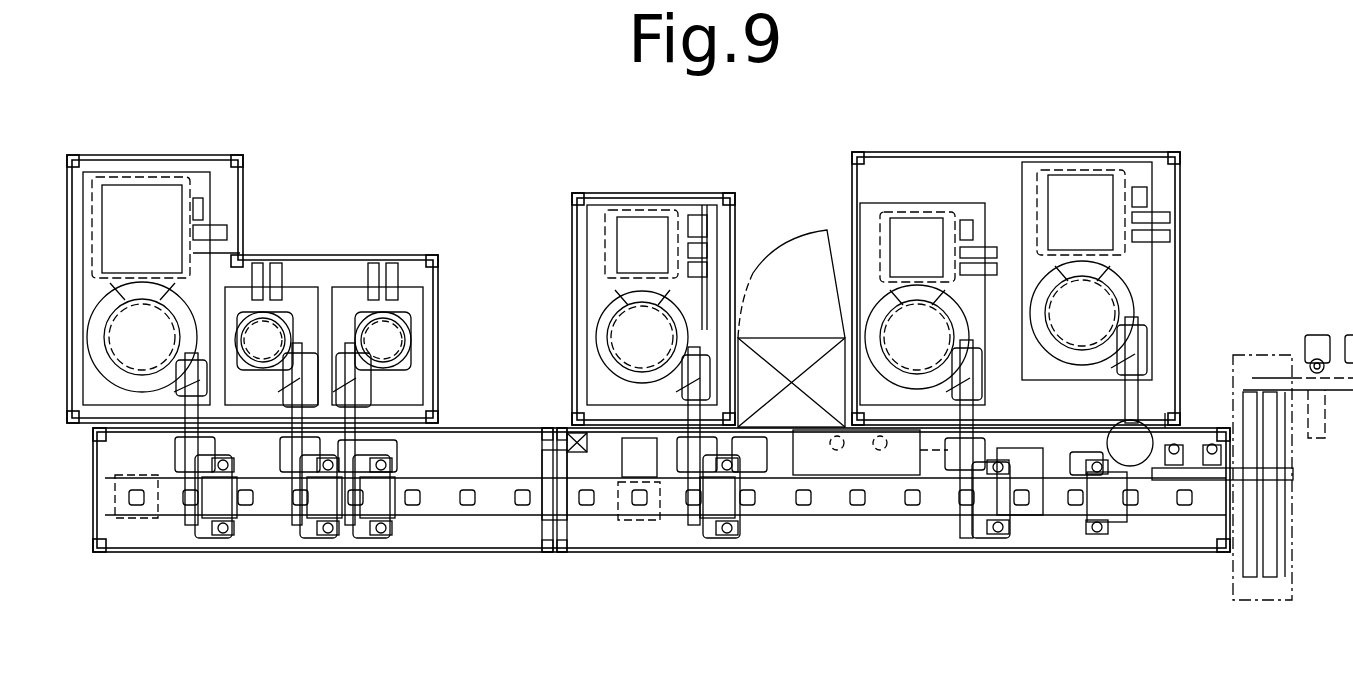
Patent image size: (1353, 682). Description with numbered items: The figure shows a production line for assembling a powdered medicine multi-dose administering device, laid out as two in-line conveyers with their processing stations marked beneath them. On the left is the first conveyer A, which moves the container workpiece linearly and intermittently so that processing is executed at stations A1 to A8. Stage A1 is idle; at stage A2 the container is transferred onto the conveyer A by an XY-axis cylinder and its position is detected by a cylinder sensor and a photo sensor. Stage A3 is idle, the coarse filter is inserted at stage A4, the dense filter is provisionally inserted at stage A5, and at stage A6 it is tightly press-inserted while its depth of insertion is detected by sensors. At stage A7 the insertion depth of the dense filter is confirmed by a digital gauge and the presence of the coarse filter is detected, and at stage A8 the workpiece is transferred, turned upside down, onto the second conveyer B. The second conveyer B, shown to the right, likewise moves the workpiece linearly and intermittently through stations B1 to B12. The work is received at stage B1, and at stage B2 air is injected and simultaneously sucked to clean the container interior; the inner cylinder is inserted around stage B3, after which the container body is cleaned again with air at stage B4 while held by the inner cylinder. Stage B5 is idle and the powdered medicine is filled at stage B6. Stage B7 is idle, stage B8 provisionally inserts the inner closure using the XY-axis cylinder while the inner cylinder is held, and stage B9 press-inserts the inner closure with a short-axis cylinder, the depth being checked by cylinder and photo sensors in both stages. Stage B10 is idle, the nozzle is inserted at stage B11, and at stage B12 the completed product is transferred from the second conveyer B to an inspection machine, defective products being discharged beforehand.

The stage A1 is at (136, 505).
The stage A2 is at (190, 505).
The stage A3 is at (245, 505).
The stage A4 is at (300, 505).
The stage A5 is at (355, 505).
The stage A6 is at (412, 505).
The stage A7 is at (467, 505).
The stage A8 is at (522, 505).
The stage B1 is at (586, 505).
The stage B2 is at (639, 505).
The stage B3 is at (693, 505).
The stage B4 is at (747, 505).
The stage B5 is at (803, 505).
The stage B6 is at (857, 505).
The stage B7 is at (912, 505).
The stage B8 is at (966, 505).
The stage B9 is at (1021, 505).
The stage B10 is at (1075, 505).
The stage B11 is at (1130, 505).
The stage B12 is at (1184, 505).
The conveyer A is at (540, 592).
The second conveyer B is at (1217, 592).